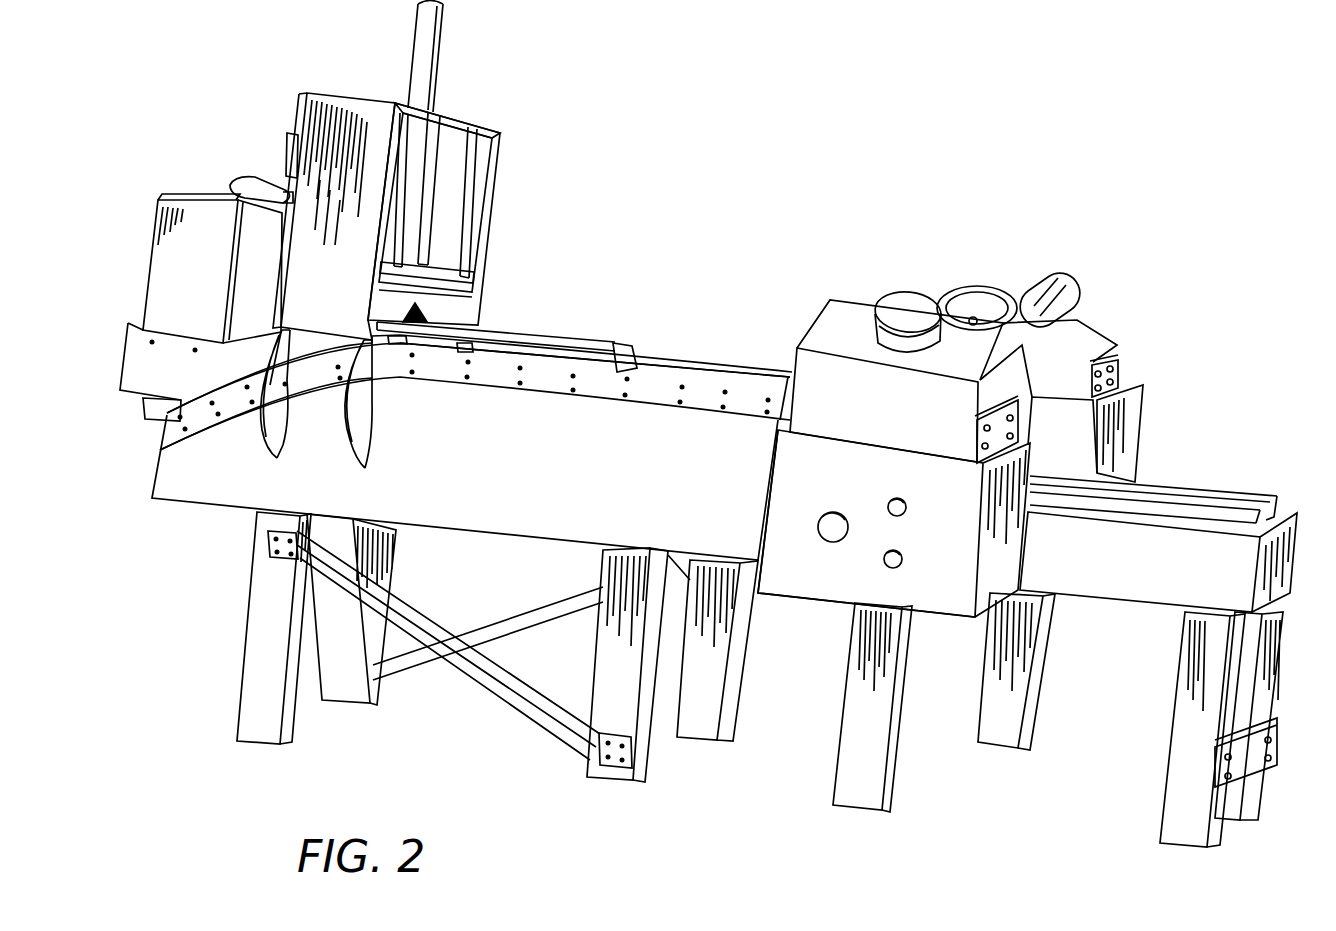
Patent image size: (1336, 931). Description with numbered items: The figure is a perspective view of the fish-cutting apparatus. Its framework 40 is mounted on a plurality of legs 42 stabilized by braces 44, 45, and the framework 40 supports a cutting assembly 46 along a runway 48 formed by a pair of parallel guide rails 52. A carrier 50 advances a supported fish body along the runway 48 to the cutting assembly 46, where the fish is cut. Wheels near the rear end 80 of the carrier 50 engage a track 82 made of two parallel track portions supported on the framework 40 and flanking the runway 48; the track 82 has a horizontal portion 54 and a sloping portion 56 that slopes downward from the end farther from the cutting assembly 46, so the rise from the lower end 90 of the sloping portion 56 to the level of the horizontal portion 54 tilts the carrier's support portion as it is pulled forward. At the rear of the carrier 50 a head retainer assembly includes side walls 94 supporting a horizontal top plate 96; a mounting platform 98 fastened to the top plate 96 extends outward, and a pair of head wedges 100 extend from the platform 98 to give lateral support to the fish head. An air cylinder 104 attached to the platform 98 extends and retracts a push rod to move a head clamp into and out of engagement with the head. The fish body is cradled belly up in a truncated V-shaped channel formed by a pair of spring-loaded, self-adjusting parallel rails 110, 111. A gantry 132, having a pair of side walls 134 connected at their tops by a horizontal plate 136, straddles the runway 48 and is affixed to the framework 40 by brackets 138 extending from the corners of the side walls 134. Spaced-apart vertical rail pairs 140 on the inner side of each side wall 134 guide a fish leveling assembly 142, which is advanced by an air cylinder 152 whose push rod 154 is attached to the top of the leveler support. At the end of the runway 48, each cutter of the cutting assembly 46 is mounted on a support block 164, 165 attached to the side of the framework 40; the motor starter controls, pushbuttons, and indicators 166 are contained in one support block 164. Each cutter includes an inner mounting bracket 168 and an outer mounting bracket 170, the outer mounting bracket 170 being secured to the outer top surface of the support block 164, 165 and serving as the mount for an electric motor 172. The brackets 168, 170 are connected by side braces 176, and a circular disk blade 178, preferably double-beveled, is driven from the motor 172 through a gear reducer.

The framework 40 is at (558, 530).
The legs 42 is at (250, 698).
The braces 44 is at (407, 667).
The braces 45 is at (1278, 738).
The cutting assembly 46 is at (1108, 300).
The runway 48 is at (1170, 493).
The carrier 50 is at (196, 152).
The guide rails 52 is at (1267, 490).
The horizontal portion 54 is at (610, 392).
The sloping portion 56 is at (237, 410).
The rear end 80 is at (140, 372).
The track 82 is at (495, 382).
The lower end 90 is at (163, 427).
The side walls 94 is at (160, 293).
The top plate 96 is at (177, 197).
The mounting platform 98 is at (255, 188).
The head wedges 100 is at (277, 262).
The air cylinder 104 is at (293, 138).
The rail 110 is at (626, 355).
The rail 111 is at (583, 352).
The gantry 132 is at (497, 153).
The side walls 134 is at (332, 100).
The horizontal plate 136 is at (480, 126).
The brackets 138 is at (275, 427).
The vertical rail pairs 140 is at (473, 217).
The fish leveling assembly 142 is at (440, 267).
The air cylinder 152 is at (435, 40).
The push rod 154 is at (418, 138).
The support block 164 is at (830, 590).
The support block 165 is at (1133, 437).
The motor starter controls, pushbuttons, and indicators 166 is at (800, 570).
The inner mounting bracket 168 is at (1013, 378).
The outer mounting bracket 170 is at (837, 423).
The electric motor 172 is at (915, 297).
The side braces 176 is at (978, 440).
The circular disk blade 178 is at (875, 298).